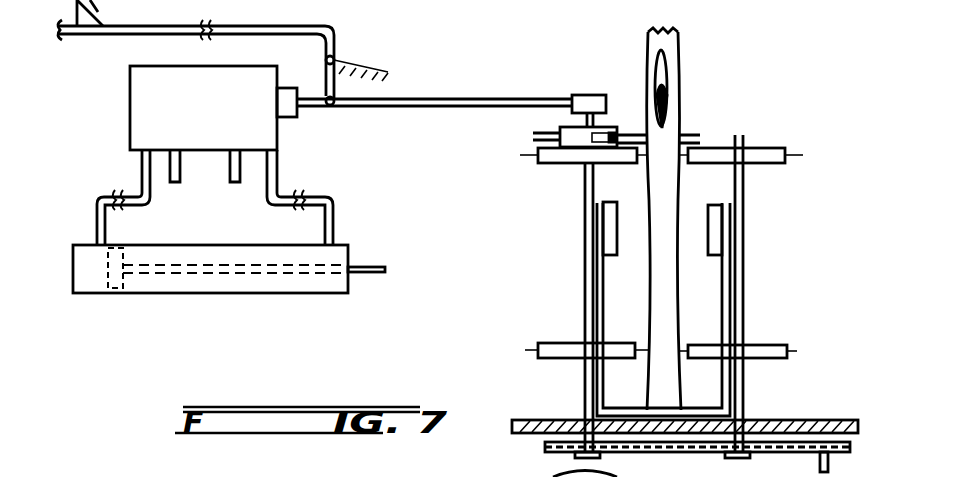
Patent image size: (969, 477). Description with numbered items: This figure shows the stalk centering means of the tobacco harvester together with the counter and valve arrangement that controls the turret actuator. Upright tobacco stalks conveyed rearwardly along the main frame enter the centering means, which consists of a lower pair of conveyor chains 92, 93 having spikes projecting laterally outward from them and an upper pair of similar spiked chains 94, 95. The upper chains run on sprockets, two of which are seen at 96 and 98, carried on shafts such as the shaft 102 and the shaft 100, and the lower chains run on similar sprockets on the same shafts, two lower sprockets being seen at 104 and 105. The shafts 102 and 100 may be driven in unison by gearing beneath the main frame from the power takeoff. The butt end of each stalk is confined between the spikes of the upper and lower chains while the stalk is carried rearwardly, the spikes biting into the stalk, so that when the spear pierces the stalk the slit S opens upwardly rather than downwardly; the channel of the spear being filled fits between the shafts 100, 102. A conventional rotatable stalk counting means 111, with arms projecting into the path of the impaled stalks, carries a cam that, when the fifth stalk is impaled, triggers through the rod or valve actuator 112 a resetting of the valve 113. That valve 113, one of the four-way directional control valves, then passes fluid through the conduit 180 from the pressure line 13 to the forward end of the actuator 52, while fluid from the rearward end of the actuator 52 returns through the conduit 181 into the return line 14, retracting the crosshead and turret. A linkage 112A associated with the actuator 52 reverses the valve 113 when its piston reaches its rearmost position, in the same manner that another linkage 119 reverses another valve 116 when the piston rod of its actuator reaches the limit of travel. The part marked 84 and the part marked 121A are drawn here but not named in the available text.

The linkage 112A is at (284, 54).
The valve 113 is at (143, 84).
The valve actuator 112 is at (522, 57).
The rotatable stalk counting means 111 is at (612, 128).
The slit S is at (667, 95).
The sprocket 96 is at (778, 149).
The upper conveyor chain 95 is at (791, 163).
The upper conveyor chain 94 is at (530, 156).
The sprocket 98 is at (560, 163).
The shaft 102 is at (585, 247).
The shaft 100 is at (745, 272).
The lower conveyor chain 93 is at (788, 351).
The conduit 181 is at (93, 220).
The return line 14 is at (181, 185).
The pressure line 13 is at (233, 179).
The conduit 180 is at (318, 200).
The actuator 52 is at (258, 283).
The piston rod 84 is at (370, 273).
The lower conveyor chain 92 is at (530, 351).
The lower sprocket 104 is at (557, 359).
The lower sprocket 105 is at (768, 358).
The linkage 119 is at (85, 476).
The directional control valve 116 is at (303, 476).
The link 121A is at (470, 470).